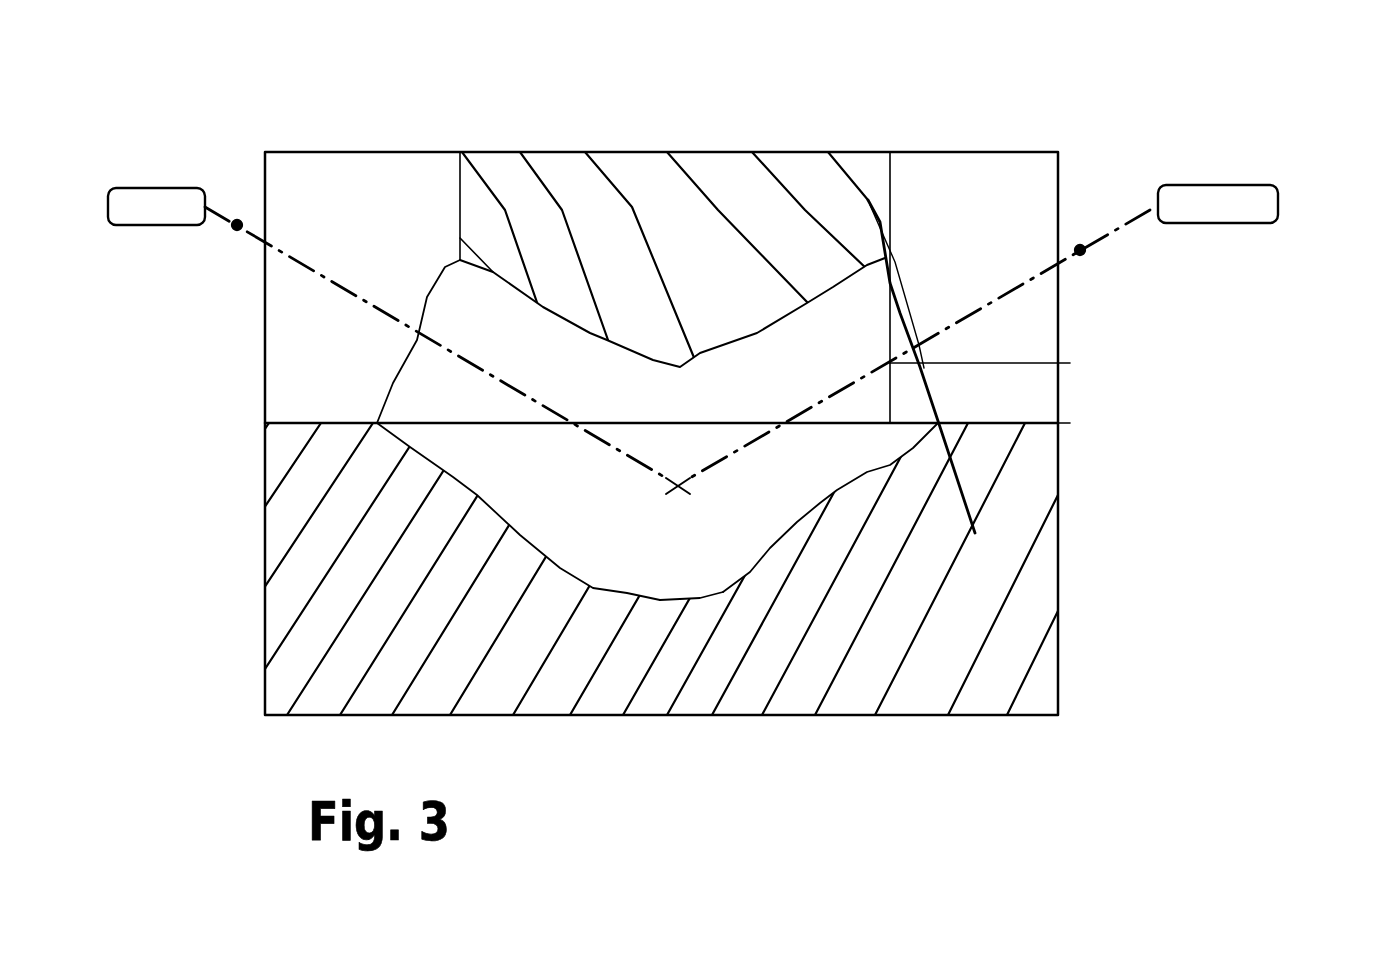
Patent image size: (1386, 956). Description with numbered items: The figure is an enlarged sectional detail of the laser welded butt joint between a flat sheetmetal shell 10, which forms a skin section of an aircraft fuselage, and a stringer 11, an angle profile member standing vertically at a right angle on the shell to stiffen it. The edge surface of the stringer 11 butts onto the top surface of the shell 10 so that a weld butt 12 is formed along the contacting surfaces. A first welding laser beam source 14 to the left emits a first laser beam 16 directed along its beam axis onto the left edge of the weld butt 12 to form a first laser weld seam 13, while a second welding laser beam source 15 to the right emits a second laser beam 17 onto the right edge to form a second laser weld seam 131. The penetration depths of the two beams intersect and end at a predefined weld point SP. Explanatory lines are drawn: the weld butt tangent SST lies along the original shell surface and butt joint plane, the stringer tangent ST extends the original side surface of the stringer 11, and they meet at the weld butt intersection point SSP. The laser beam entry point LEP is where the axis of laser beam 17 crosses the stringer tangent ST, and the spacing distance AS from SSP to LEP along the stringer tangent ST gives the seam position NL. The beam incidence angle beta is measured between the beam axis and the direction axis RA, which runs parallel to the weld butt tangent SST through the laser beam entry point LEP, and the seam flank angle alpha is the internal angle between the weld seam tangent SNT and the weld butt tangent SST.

The flat sheetmetal shell 10 is at (507, 663).
The stringer 11 is at (648, 180).
The weld butt 12 is at (543, 445).
The first laser weld seam 13 is at (440, 520).
The second laser weld seam 131 is at (848, 526).
The first welding laser beam source 14 is at (148, 200).
The second welding laser beam source 15 is at (1230, 195).
The first laser beam 16 is at (237, 225).
The second laser beam 17 is at (1080, 250).
The weld seam tangent SNT is at (870, 212).
The stringer tangent ST is at (890, 305).
The laser beam entry point LEP is at (890, 363).
The weld butt intersection point SSP is at (890, 423).
The weld butt tangent SST is at (703, 423).
The weld point SP is at (678, 512).
The direction axis RA is at (940, 363).
The spacing distance AS is at (1033, 473).
The seam position NL is at (1094, 365).
The seam flank angle alpha is at (873, 232).
The beam incidence angle beta is at (1014, 291).